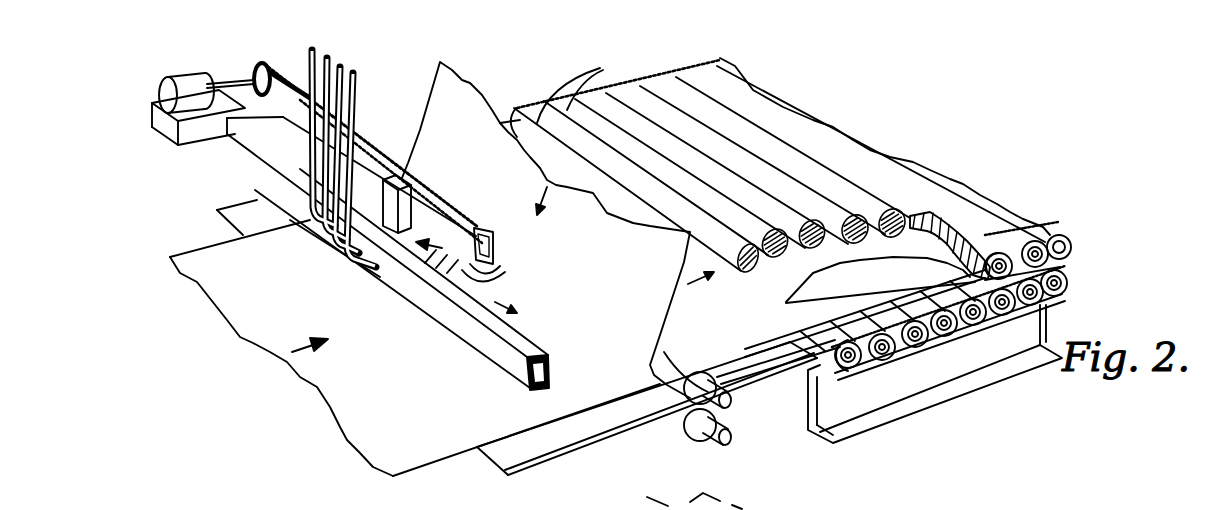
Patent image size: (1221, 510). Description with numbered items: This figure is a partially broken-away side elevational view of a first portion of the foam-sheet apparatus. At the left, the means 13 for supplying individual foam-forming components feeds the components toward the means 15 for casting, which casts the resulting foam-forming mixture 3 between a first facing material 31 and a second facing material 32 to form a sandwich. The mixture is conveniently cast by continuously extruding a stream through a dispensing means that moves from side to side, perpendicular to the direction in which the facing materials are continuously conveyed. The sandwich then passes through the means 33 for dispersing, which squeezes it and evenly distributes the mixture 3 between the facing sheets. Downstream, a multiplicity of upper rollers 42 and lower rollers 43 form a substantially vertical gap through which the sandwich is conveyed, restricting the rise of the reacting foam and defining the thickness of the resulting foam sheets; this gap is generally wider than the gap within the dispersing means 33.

The foam-forming mixture 3 is at (515, 288).
The means for supplying individual foam-forming components 13 is at (313, 82).
The means for casting the foam-forming mixture 15 is at (497, 264).
The first facing material 31 is at (253, 326).
The second facing material 32 is at (458, 110).
The means for dispersing the mixture 33 is at (722, 408).
The upper rollers 42 is at (1098, 215).
The lower rollers 43 is at (1078, 280).